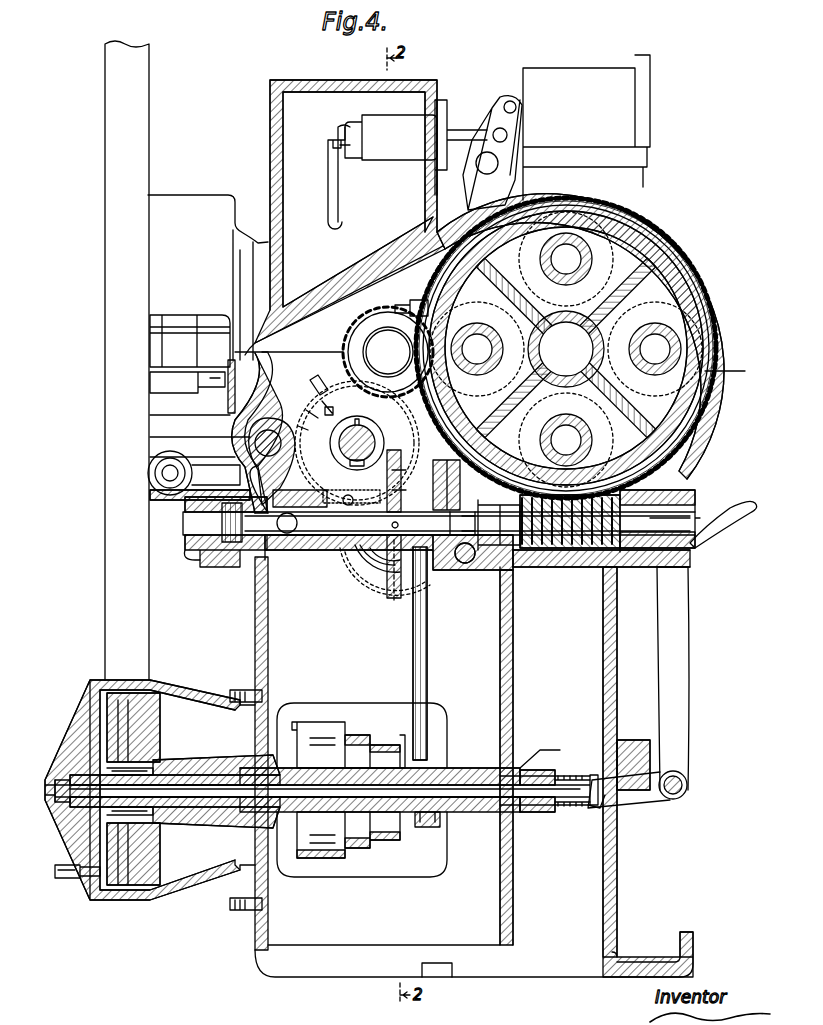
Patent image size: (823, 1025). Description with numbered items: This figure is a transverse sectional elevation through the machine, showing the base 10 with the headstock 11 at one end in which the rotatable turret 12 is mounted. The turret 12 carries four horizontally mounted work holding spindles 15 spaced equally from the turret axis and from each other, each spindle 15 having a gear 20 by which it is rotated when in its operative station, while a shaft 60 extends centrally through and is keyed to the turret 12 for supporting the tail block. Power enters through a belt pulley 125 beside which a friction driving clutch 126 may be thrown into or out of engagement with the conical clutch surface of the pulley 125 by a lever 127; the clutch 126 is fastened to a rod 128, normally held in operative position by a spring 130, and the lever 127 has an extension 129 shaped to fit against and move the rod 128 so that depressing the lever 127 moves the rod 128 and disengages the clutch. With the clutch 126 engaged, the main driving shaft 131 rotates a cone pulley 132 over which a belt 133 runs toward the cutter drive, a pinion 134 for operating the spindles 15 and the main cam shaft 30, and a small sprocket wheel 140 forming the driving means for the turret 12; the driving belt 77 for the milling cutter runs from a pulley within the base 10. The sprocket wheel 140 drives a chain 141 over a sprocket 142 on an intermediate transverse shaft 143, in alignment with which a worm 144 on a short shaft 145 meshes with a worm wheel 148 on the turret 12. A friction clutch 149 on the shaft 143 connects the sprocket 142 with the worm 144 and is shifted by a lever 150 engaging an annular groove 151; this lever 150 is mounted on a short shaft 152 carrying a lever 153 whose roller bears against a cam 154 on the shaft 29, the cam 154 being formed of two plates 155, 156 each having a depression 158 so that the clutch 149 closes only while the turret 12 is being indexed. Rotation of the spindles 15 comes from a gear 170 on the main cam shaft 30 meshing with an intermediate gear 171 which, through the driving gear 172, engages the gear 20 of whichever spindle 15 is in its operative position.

The base 10 is at (618, 893).
The headstock 11 is at (650, 205).
The turret 12 is at (675, 240).
The work holding spindles 15 is at (733, 371).
The gear 20 is at (566, 315).
The shaft 29 is at (358, 430).
The main cam shaft 30 is at (370, 560).
The shaft 60 is at (561, 375).
The driving belt 77 is at (195, 332).
The belt pulley 125 is at (147, 712).
The friction driving clutch 126 is at (100, 714).
The lever 127 is at (680, 690).
The rod 128 is at (510, 768).
The extension 129 is at (591, 818).
The spring 130 is at (582, 778).
The main driving shaft 131 is at (483, 765).
The cone pulley 132 is at (322, 720).
The belt 133 is at (395, 842).
The pinion 134 is at (530, 812).
The sprocket wheel 140 is at (430, 827).
The chain 141 is at (430, 657).
The sprocket 142 is at (440, 570).
The intermediate transverse shaft 143 is at (333, 545).
The worm 144 is at (560, 547).
The short shaft 145 is at (700, 515).
The worm wheel 148 is at (700, 285).
The friction clutch 149 is at (382, 580).
The lever 150 is at (283, 440).
The annular groove 151 is at (300, 553).
The short shaft 152 is at (270, 424).
The lever 153 is at (305, 494).
The cam 154 is at (328, 390).
The plate 155 is at (248, 476).
The plate 156 is at (318, 397).
The depression 158 is at (351, 492).
The gear 170 is at (398, 605).
The intermediate gear 171 is at (423, 477).
The driving gear 172 is at (380, 312).